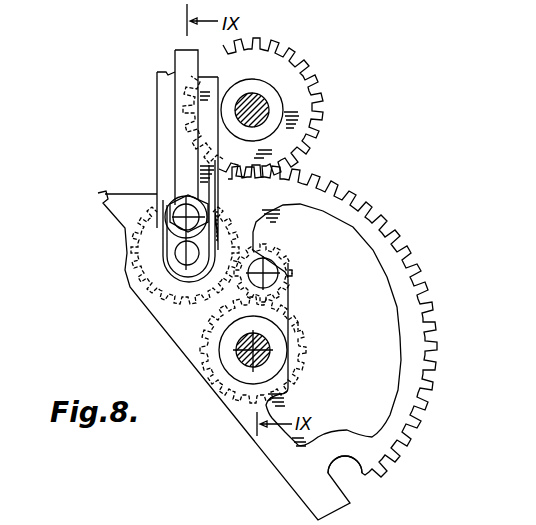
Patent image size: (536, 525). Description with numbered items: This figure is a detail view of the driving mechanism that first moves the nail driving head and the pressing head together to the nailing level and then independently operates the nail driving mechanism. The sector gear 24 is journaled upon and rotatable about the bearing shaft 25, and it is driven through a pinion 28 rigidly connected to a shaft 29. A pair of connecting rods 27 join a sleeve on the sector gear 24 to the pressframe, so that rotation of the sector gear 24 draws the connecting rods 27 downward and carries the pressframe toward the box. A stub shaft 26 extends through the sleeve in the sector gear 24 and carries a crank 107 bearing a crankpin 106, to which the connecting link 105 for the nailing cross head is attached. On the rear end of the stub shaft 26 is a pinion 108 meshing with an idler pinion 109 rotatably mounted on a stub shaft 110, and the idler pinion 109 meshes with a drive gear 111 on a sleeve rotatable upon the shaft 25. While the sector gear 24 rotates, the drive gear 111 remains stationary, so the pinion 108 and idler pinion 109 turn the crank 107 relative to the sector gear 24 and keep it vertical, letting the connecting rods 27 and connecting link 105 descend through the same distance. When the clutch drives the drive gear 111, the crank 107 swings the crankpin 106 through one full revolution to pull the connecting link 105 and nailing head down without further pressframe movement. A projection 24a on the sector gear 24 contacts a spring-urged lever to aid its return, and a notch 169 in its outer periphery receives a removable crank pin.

The sector gear 24 is at (392, 264).
The projection 24a is at (105, 197).
The bearing shaft 25 is at (287, 352).
The stub shaft 26 is at (172, 258).
The connecting rods 27 is at (172, 160).
The pinion 28 is at (305, 112).
The shaft 29 is at (272, 101).
The connecting link 105 is at (183, 115).
The crankpin 106 is at (178, 220).
The crank 107 is at (175, 253).
The pinion 108 is at (226, 224).
The idler pinion 109 is at (292, 265).
The stub shaft 110 is at (272, 277).
The drive gear 111 is at (296, 326).
The notch 169 is at (362, 480).